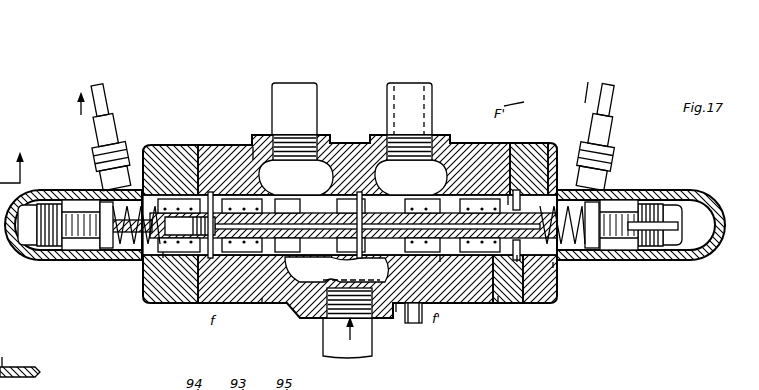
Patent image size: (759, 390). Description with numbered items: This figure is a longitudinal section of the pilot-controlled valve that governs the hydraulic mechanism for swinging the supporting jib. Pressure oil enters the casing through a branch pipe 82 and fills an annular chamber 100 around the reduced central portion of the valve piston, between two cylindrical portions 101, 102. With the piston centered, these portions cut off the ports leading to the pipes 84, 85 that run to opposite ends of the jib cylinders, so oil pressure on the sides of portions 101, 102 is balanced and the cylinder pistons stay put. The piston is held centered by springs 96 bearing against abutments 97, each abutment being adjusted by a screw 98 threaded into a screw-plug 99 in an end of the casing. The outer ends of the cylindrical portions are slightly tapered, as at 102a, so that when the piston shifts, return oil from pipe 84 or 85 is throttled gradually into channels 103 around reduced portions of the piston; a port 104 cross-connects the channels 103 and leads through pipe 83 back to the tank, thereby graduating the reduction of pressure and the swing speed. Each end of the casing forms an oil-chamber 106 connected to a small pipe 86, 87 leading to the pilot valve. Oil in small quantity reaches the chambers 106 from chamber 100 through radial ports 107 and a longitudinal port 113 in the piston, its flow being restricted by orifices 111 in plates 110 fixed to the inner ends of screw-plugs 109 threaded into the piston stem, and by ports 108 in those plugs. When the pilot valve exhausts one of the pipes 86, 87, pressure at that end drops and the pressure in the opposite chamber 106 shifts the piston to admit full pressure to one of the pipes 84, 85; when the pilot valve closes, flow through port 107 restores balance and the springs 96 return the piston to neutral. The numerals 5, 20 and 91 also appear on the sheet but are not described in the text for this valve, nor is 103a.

The valve assembly 5 is at (3, 141).
The axis arrow 20 is at (25, 172).
The branch pipe 82 is at (373, 348).
The pipe 83 is at (420, 322).
The pipe 84 is at (317, 113).
The pipe 85 is at (433, 93).
The pipe 86 is at (107, 100).
The pipe 87 is at (611, 103).
The spring retainer rod 91 is at (633, 246).
The spring 96 is at (122, 258).
The abutment 97 is at (100, 258).
The screw 98 is at (63, 258).
The screw-plug 99 is at (27, 260).
The annular chamber 100 is at (348, 192).
The cylindrical portion 101 is at (258, 304).
The cylindrical portion 102 is at (378, 246).
The tapered portion 102a is at (408, 304).
The channel 103 is at (253, 147).
The port branch 103a is at (272, 262).
The port 104 is at (440, 262).
The oil-chamber 106 is at (163, 252).
The radial port 107 is at (440, 157).
The port 108 is at (517, 262).
The screw-plug 109 is at (545, 200).
The plate 110 is at (508, 195).
The restricted orifice 111 is at (498, 303).
The longitudinal port 113 is at (370, 192).